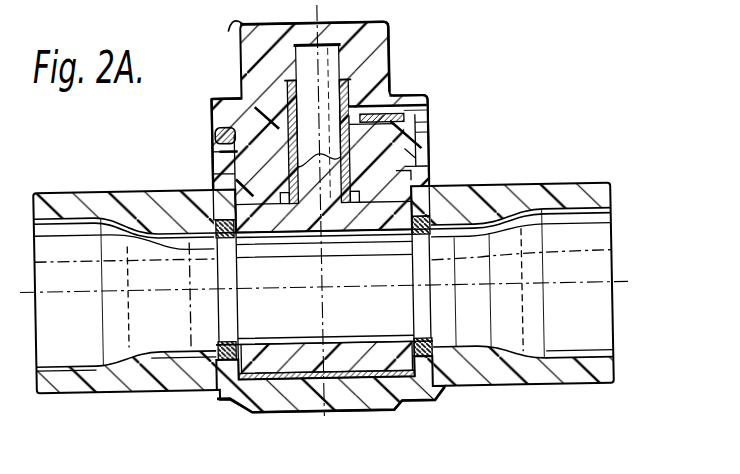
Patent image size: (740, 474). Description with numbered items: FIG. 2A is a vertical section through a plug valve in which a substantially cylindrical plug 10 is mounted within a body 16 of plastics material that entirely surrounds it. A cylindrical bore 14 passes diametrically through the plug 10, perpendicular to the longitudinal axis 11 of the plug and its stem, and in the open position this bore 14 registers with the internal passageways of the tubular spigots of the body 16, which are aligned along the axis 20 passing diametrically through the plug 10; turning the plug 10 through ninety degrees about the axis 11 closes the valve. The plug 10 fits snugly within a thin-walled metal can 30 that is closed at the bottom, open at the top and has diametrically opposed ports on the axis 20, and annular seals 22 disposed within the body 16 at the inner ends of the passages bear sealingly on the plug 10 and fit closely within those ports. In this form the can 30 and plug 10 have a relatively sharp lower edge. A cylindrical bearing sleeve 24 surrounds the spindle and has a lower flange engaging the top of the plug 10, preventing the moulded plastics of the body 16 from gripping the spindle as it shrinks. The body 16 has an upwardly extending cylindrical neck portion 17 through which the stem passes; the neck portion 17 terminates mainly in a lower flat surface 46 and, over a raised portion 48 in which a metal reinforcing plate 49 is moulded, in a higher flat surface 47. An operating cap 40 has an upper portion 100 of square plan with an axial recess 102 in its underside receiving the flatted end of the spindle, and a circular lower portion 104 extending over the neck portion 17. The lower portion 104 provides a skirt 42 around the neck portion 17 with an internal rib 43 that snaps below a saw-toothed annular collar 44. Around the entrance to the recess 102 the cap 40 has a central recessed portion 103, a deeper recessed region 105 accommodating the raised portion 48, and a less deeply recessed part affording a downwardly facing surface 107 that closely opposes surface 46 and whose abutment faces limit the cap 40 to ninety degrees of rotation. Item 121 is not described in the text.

The plug 10 is at (265, 368).
The longitudinal axis 11 is at (305, 268).
The bore 14 is at (382, 338).
The body 16 is at (497, 200).
The neck portion 17 is at (383, 125).
The axis 20 is at (637, 284).
The annular seals 22 is at (222, 330).
The bearing sleeve 24 is at (217, 182).
The can 30 is at (290, 372).
The operating cap 40 is at (214, 98).
The skirt 42 is at (437, 143).
The rib 43 is at (398, 172).
The annular collar 44 is at (433, 130).
The flat surface 46 is at (234, 126).
The flat surface 47 is at (410, 97).
The portion 48 is at (437, 113).
The metal reinforcing plate 49 is at (385, 140).
The upper portion 100 is at (300, 61).
The axial recess 102 is at (352, 65).
The central recessed portion 103 is at (272, 115).
The lower portion 104 is at (437, 100).
The recessed region 105 is at (393, 92).
The downwardly facing surface 107 is at (222, 143).
The bonnet cap edge 121 is at (203, 33).